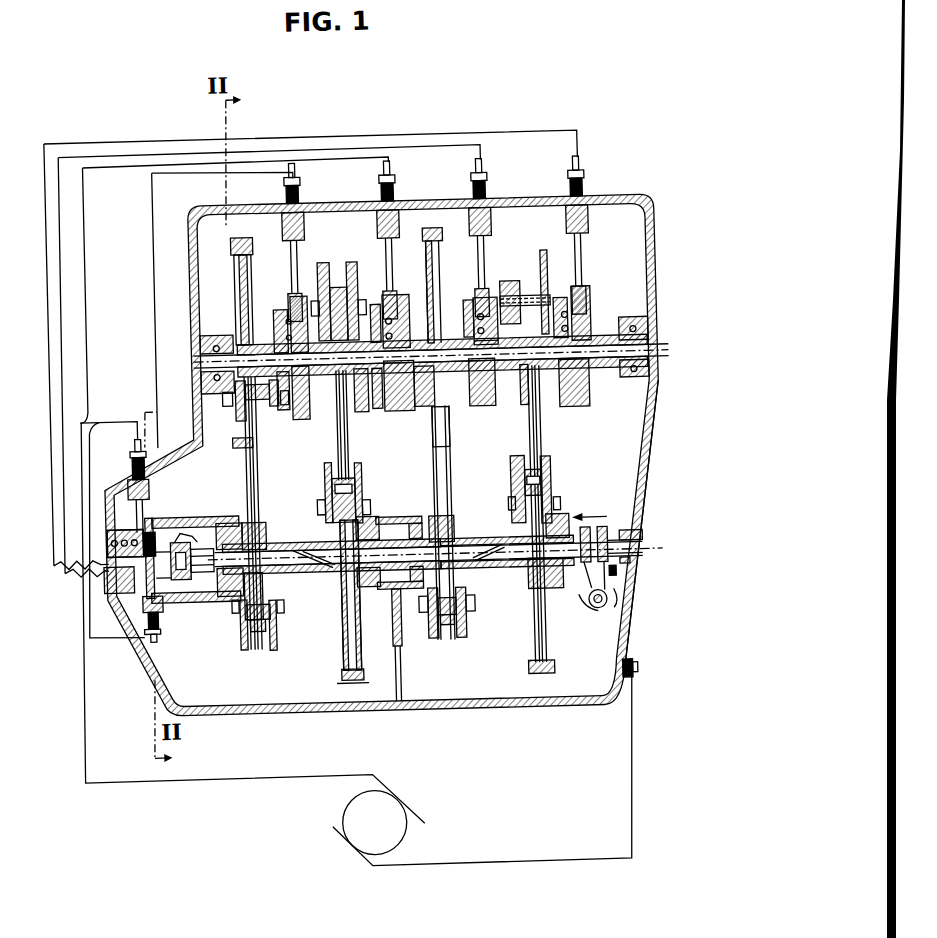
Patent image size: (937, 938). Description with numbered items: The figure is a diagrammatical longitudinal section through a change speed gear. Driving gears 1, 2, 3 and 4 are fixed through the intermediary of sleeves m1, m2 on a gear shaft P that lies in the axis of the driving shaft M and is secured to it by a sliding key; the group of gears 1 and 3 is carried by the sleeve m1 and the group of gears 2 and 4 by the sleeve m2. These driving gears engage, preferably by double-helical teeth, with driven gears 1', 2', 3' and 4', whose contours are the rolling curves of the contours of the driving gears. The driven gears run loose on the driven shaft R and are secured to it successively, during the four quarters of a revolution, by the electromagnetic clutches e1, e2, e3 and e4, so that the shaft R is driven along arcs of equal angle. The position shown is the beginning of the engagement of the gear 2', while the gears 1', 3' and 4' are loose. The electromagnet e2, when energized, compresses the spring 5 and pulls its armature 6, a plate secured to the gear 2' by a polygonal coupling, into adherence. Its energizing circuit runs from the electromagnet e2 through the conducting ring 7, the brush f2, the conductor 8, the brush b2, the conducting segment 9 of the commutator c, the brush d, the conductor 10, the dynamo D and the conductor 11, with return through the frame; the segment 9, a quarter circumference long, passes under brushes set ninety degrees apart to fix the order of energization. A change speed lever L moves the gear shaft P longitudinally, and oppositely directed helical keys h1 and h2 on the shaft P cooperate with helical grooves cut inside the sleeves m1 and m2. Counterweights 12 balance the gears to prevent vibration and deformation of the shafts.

The driving gear 1 is at (260, 513).
The driven gear 1' is at (190, 293).
The driving gear 2 is at (450, 503).
The driven gear 2' is at (462, 430).
The driving gear 3 is at (348, 609).
The driven gear 3' is at (363, 424).
The driving gear 4 is at (557, 521).
The driven gear 4' is at (566, 517).
The spring 5 is at (544, 313).
The armature 6 is at (468, 300).
The conducting ring 7 is at (489, 296).
The conductor 8 is at (420, 146).
The conducting segment 9 is at (146, 610).
The conductor 10 is at (116, 412).
The conductor 11 is at (499, 860).
The counterweights 12 is at (327, 263).
The supply conductor c is at (105, 540).
The brush d is at (141, 519).
The dynamo D is at (365, 826).
The change speed lever L is at (607, 587).
The driving shaft M is at (103, 566).
The gear shaft P is at (637, 565).
The driven shaft R is at (651, 406).
The brush b2 is at (160, 541).
The electromagnetic clutch e1 is at (279, 306).
The electromagnetic clutch e2 is at (509, 320).
The electromagnetic clutch e3 is at (399, 299).
The electromagnetic clutch e4 is at (594, 308).
The brush f2 is at (491, 291).
The helical key h1 is at (313, 559).
The helical key h2 is at (482, 564).
The sleeve m1 is at (281, 538).
The sleeve m2 is at (468, 541).